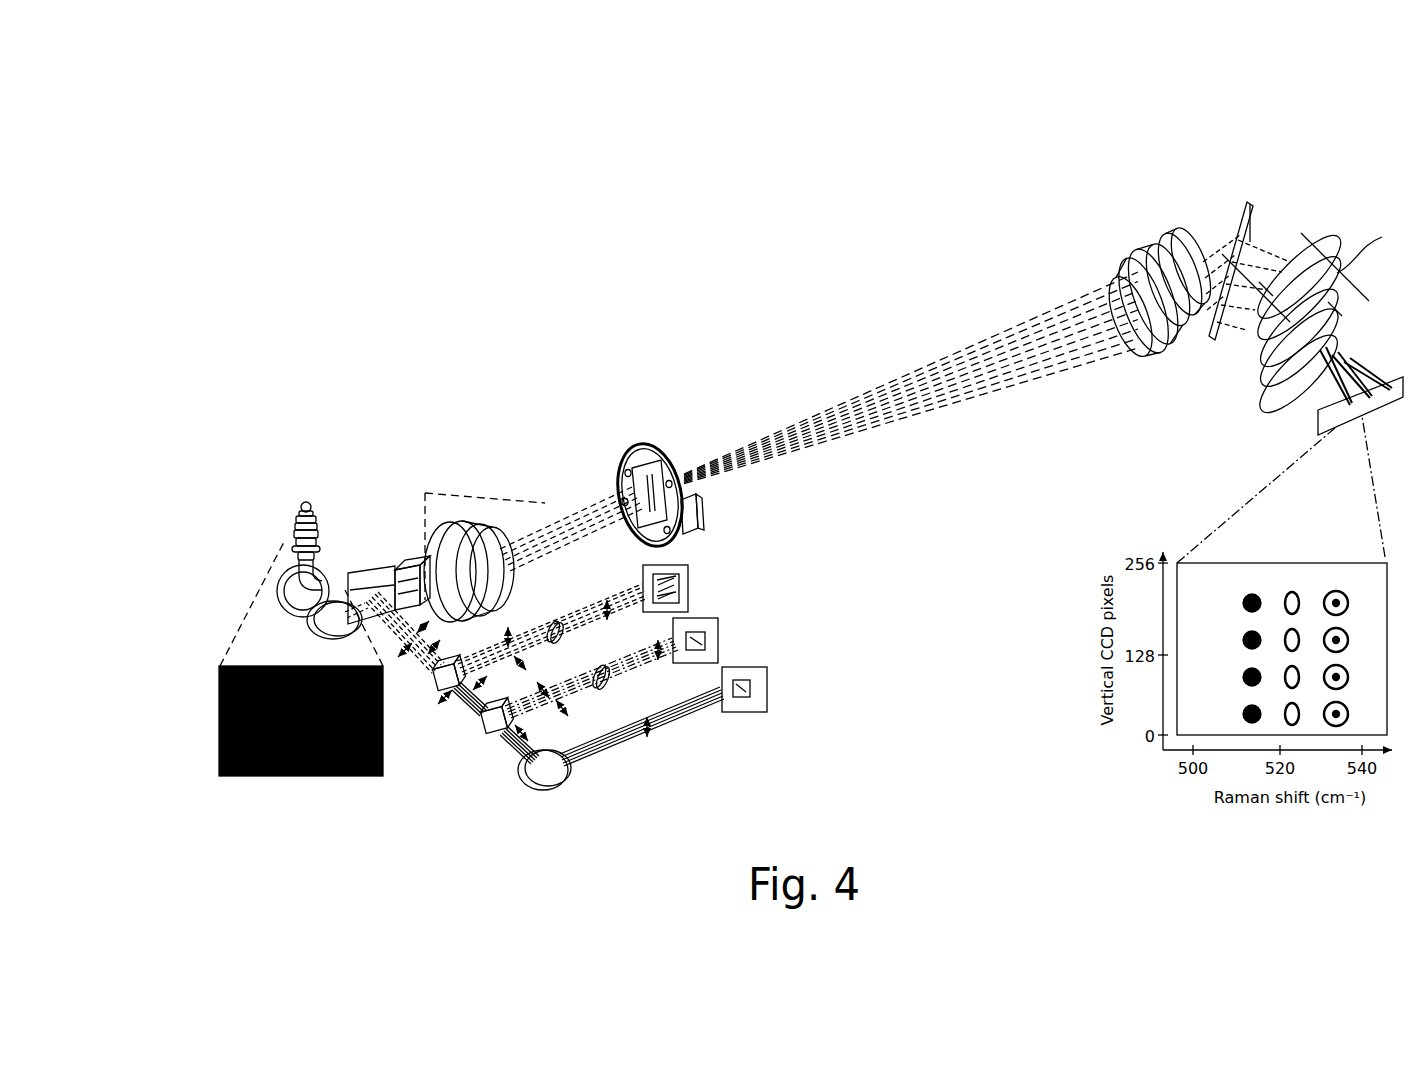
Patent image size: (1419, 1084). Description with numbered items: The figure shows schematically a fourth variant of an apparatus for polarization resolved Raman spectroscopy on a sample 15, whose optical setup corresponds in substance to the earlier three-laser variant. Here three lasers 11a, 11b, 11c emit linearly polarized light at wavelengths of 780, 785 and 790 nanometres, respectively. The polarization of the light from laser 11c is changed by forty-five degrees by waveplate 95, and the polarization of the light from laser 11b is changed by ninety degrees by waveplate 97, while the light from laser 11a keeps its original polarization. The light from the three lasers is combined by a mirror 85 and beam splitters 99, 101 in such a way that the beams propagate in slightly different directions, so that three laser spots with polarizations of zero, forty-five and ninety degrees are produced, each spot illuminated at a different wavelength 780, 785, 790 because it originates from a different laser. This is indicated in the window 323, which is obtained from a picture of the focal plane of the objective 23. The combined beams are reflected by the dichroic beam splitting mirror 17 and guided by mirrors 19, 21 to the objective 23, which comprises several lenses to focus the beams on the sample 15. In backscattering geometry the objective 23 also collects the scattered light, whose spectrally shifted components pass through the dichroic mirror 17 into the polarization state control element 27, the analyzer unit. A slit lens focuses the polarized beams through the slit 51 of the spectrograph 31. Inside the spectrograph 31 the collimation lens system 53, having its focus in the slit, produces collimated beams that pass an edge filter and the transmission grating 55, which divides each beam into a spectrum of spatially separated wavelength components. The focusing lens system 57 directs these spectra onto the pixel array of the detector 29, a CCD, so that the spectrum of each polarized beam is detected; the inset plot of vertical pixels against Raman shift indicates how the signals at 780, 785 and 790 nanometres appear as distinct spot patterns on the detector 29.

The sample 15 is at (298, 508).
The dichroic beam splitting mirror 17 is at (364, 568).
The mirror 19 is at (312, 632).
The mirror 21 is at (286, 610).
The objective 23 is at (292, 527).
The polarization state control element 27 is at (408, 522).
The detector 29 is at (1320, 413).
The spectrograph 31 is at (1238, 175).
The slit 51 is at (641, 440).
The collimation lens system 53 is at (1125, 245).
The transmission grating 55 is at (1252, 203).
The focusing lens system 57 is at (1315, 255).
The mirror 85 is at (537, 779).
The waveplate 95 is at (561, 623).
The waveplate 97 is at (605, 668).
The beam splitter 99 is at (487, 733).
The beam splitter 101 is at (433, 688).
The laser 11a is at (750, 713).
The laser 11b is at (720, 620).
The laser 11c is at (690, 568).
The 780 nm wavelength 780 is at (1252, 549).
The 785 nm wavelength 785 is at (1293, 527).
The 790 nm wavelength 790 is at (1337, 549).
The window 323 is at (218, 718).